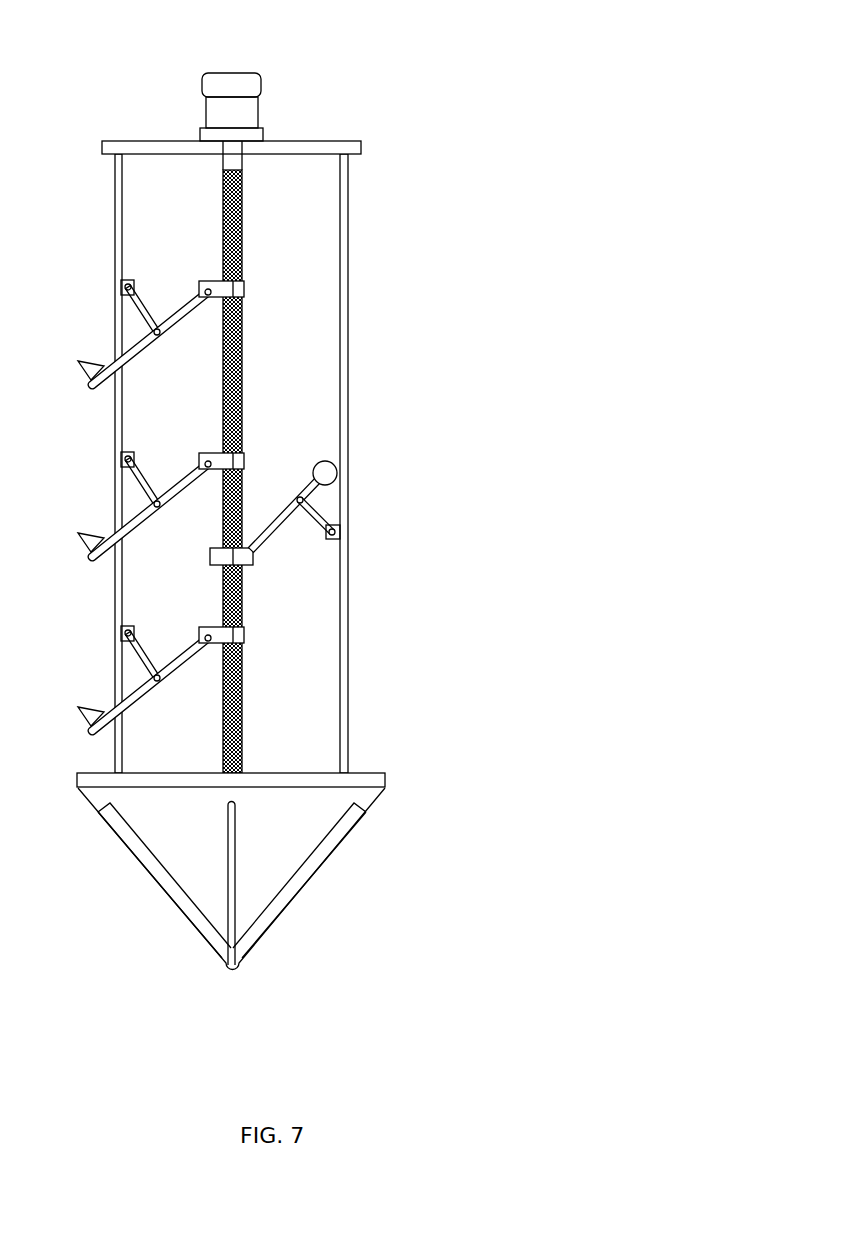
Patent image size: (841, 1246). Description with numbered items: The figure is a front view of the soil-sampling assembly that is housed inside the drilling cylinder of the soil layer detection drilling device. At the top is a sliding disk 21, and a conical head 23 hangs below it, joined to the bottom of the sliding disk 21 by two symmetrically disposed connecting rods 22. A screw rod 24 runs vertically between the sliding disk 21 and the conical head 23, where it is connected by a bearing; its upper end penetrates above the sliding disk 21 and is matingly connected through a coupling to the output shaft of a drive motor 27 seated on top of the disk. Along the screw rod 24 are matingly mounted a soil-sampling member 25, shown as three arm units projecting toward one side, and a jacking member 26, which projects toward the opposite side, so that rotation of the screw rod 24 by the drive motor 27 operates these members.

The sliding disk 21 is at (328, 149).
The connecting rod 22 is at (347, 242).
The conical head 23 is at (320, 787).
The screw rod 24 is at (240, 700).
The soil-sampling member 25 is at (243, 463).
The jacking member 26 is at (298, 507).
The drive motor 27 is at (247, 97).